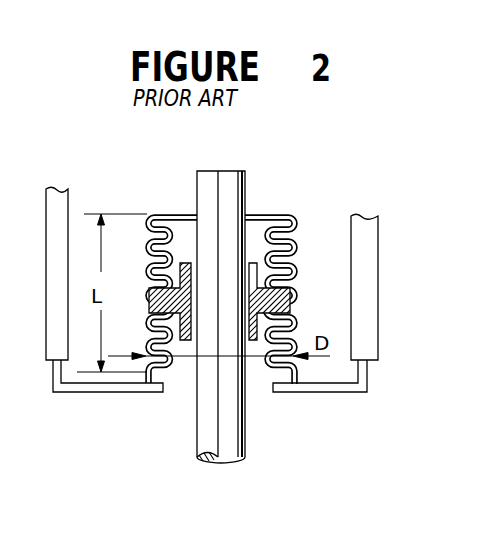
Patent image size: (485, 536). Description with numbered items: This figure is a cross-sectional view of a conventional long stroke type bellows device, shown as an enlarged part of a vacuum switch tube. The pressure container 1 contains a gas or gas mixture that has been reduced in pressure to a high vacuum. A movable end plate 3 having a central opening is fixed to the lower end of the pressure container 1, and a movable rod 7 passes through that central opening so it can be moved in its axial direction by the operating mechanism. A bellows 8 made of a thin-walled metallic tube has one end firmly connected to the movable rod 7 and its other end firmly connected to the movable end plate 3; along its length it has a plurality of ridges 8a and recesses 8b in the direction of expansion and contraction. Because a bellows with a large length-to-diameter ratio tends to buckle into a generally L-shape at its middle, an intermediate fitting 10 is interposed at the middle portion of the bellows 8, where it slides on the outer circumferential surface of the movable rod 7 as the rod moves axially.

The pressure container 1 is at (368, 287).
The movable end plate 3 is at (320, 394).
The movable rod 7 is at (244, 186).
The bellows 8 is at (277, 218).
The ridges 8a is at (293, 218).
The recesses 8b is at (297, 237).
The intermediate fitting 10 is at (291, 297).